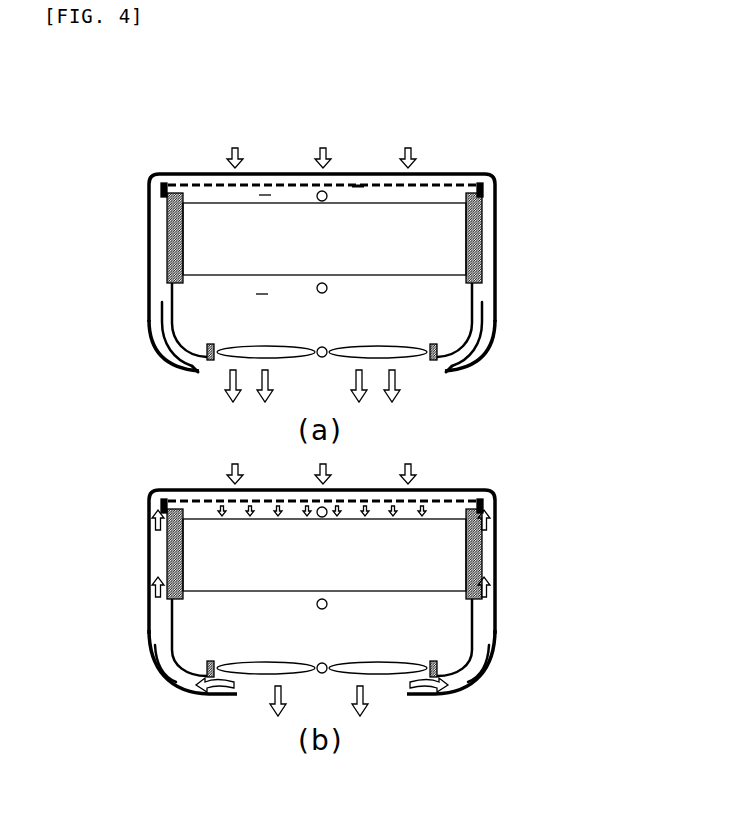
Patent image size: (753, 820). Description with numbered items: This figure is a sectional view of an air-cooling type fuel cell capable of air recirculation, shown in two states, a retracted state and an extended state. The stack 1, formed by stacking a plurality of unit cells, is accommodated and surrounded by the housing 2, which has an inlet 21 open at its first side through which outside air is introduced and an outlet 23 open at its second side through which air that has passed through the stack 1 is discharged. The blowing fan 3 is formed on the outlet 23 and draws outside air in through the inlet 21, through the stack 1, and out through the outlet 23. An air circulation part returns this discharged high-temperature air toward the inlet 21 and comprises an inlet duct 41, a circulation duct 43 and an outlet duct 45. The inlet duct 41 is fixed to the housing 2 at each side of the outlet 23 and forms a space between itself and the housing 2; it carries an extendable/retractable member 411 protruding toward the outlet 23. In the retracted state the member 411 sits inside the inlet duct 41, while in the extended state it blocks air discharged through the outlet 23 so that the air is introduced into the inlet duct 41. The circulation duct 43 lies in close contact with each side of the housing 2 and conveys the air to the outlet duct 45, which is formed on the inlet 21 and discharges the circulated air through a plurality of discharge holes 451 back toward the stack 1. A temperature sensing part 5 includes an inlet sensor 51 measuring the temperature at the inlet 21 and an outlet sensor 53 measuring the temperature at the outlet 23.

The stack 1 is at (213, 218).
The housing 2 is at (477, 207).
The blowing fan 3 is at (290, 360).
The temperature sensing part 5 is at (337, 350).
The inlet sensor 51 is at (314, 190).
The outlet sensor 53 is at (328, 292).
The inlet 21 is at (265, 195).
The outlet 23 is at (262, 294).
The inlet duct 41 is at (148, 310).
The extendable/retractable member 411 is at (191, 368).
The circulation duct 43 is at (147, 233).
The outlet duct 45 is at (432, 174).
The discharge holes 451 is at (358, 186).